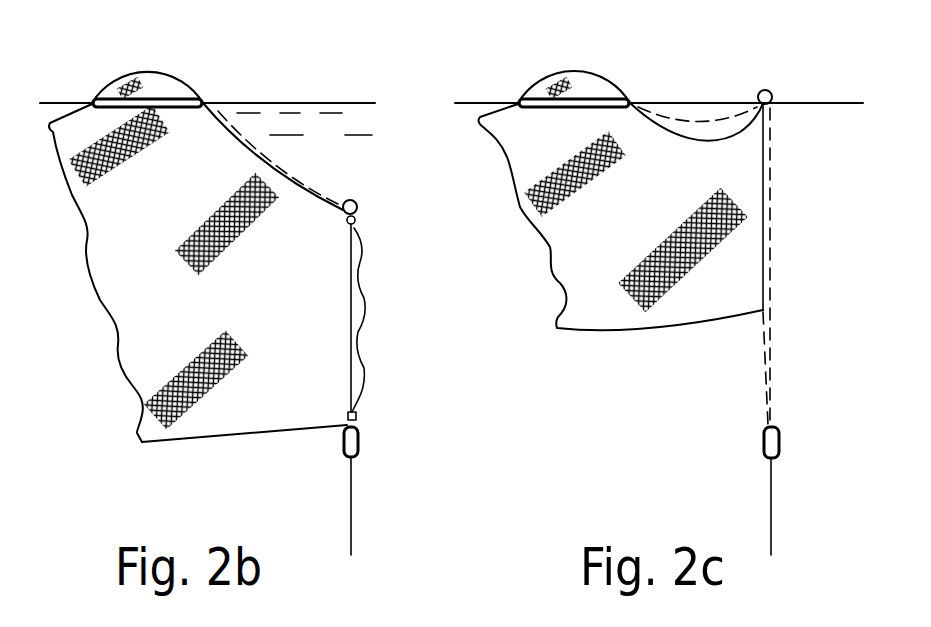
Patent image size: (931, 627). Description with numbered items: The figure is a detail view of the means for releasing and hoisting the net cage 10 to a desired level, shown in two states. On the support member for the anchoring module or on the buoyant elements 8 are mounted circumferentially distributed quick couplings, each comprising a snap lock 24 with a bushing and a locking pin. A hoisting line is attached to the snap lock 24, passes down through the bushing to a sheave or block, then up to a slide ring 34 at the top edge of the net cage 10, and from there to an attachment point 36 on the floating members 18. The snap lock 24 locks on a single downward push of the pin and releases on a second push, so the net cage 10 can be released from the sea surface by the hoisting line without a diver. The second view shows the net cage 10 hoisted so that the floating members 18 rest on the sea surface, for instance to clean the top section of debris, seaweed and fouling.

In FIG. 2B, the buoyant elements 8 is at (360, 447).
In FIG. 2C, the buoyant elements 8 is at (771, 491).
In FIG. 2B, the fishing net 10 is at (230, 447).
In FIG. 2C, the fishing net 10 is at (621, 216).
In FIG. 2C, the floating members 18 is at (771, 91).
In FIG. 2B, the snap lock 24 is at (357, 420).
In FIG. 2C, the snap lock 24 is at (766, 266).
In FIG. 2B, the slide ring 34 is at (357, 203).
In FIG. 2B, the attachment point 36 is at (203, 103).
In FIG. 2C, the attachment point 36 is at (574, 89).